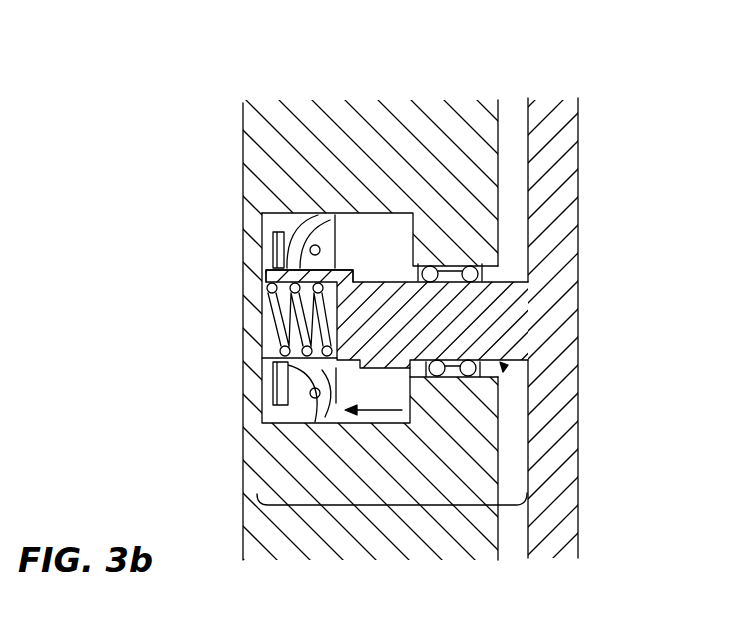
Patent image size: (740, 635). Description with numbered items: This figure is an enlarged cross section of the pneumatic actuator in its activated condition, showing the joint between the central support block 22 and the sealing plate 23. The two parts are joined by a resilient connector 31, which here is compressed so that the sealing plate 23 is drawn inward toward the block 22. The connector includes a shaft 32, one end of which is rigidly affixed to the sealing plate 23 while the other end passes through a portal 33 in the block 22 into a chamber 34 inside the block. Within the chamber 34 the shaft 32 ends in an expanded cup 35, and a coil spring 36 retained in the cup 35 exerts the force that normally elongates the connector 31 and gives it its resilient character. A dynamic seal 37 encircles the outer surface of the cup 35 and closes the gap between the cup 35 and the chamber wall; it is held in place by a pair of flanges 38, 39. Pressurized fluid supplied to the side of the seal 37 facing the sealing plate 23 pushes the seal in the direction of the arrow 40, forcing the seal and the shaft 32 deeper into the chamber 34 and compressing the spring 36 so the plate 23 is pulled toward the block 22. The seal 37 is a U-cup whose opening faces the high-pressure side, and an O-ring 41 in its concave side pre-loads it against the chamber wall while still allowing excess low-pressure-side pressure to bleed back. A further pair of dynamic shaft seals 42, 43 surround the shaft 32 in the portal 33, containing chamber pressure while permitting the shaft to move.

The central support block 22 is at (243, 122).
The sealing plate 23 is at (578, 123).
The resilient connector 31 is at (394, 509).
The shaft 32 is at (518, 282).
The portal 33 is at (504, 366).
The chamber 34 is at (388, 232).
The expanded cup 35 is at (350, 268).
The coil spring 36 is at (268, 296).
The dynamic seal 37 is at (297, 213).
The flange 38 is at (345, 268).
The flange 39 is at (275, 231).
The arrow 40 is at (366, 421).
The O-ring 41 is at (313, 394).
The shaft seal 42 is at (440, 377).
The shaft seal 43 is at (470, 377).